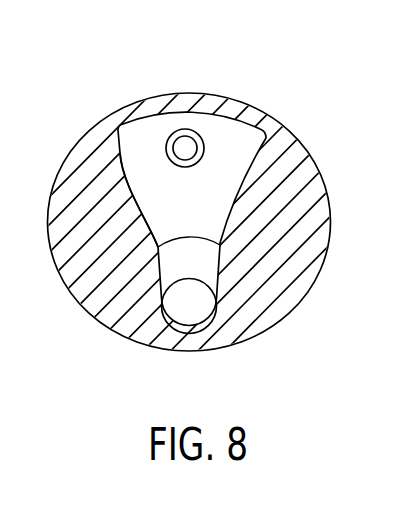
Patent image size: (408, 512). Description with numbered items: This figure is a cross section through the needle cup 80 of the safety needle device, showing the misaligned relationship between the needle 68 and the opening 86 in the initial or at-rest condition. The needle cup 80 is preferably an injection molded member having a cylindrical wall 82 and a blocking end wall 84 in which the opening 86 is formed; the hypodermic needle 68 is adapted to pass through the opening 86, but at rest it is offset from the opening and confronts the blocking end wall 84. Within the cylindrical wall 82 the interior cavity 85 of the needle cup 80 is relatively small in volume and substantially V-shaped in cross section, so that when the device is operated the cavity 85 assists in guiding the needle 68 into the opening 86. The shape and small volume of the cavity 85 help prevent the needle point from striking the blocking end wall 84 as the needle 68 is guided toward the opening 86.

The needle cup 80 is at (204, 256).
The cylindrical wall 82 is at (329, 250).
The blocking end wall 84 is at (198, 197).
The interior cavity 85 is at (168, 215).
The opening 86 is at (182, 313).
The hypodermic needle 68 is at (173, 133).